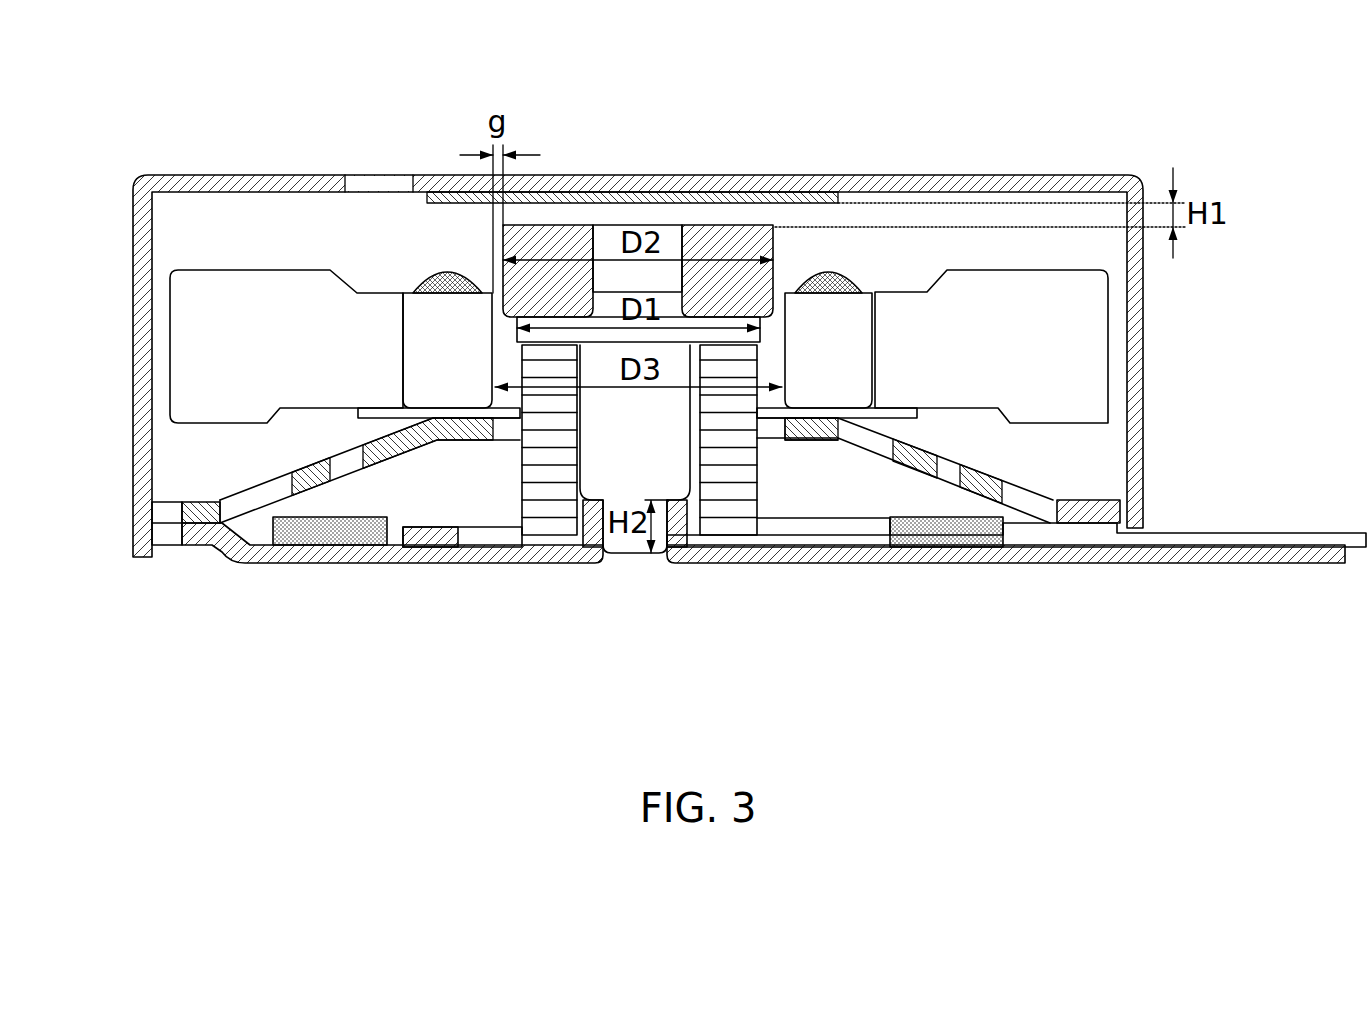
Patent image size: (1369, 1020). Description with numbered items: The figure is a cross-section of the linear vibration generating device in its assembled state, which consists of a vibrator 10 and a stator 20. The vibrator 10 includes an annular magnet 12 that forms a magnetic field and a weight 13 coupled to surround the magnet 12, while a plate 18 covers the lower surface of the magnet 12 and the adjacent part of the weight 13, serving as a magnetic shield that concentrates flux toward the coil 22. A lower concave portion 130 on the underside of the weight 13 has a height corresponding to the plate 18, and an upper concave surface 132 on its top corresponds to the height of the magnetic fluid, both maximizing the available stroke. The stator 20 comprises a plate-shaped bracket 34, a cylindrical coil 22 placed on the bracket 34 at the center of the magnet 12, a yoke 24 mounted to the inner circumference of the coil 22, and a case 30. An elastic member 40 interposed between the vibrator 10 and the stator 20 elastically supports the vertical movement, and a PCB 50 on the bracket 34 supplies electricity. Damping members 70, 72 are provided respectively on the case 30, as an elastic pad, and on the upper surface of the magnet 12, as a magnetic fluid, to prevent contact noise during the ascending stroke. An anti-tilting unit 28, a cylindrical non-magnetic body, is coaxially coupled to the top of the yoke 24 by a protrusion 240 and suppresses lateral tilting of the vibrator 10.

The vibrator 10 is at (472, 103).
The magnet 12 is at (450, 317).
The weight 13 is at (300, 290).
The plate 18 is at (923, 410).
The stator 20 is at (722, 647).
The coil 22 is at (738, 512).
The yoke 24 is at (662, 533).
The anti-tilting unit 28 is at (560, 242).
The case 30 is at (138, 493).
The bracket 34 is at (215, 537).
The elastic member 40 is at (1100, 520).
The PCB 50 is at (437, 528).
The damping member 70 is at (743, 198).
The damping member 72 is at (825, 275).
The lower concave portion 130 is at (323, 410).
The upper concave surface 132 is at (907, 292).
The protrusion 240 is at (672, 292).